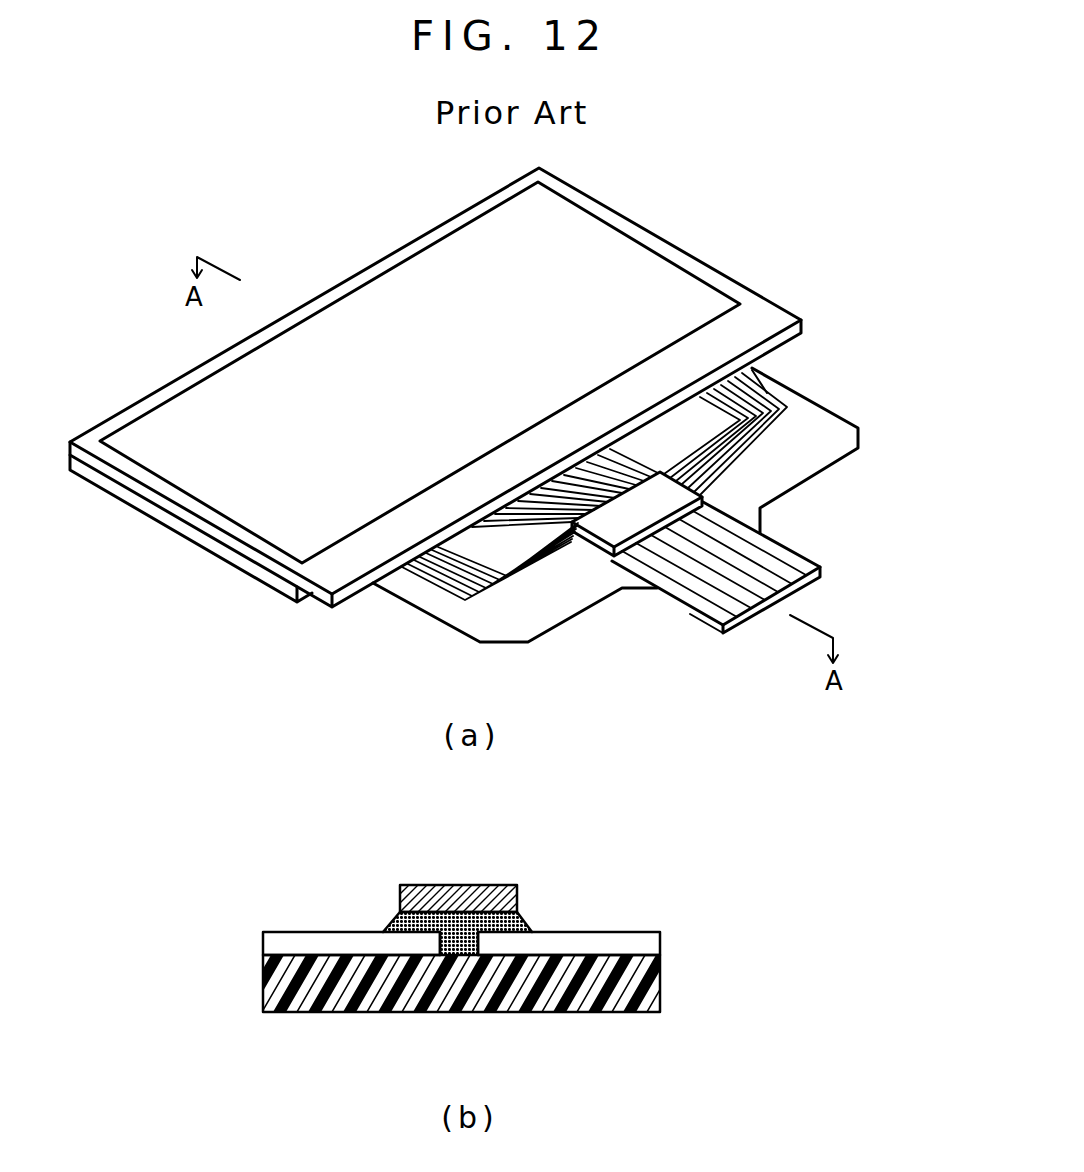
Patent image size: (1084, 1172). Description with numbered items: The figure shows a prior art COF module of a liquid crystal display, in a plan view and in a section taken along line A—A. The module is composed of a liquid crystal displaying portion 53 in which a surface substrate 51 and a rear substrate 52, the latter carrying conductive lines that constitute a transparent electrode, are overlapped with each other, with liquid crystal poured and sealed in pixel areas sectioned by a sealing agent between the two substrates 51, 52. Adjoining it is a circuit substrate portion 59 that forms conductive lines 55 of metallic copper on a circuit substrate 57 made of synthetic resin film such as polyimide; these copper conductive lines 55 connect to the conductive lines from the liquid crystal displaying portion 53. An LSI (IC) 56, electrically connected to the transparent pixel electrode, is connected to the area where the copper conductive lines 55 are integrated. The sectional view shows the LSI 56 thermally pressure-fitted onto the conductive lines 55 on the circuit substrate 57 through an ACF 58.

The surface substrate 51 is at (670, 241).
The rear substrate 52 is at (193, 543).
The liquid crystal displaying portion 53 is at (450, 387).
The conductive lines 55 is at (782, 382).
The LSI (IC) 56 is at (628, 528).
The circuit substrate 57 is at (858, 438).
The ACF (Anisotropic Conductive Film) 58 is at (513, 930).
The circuit substrate portion 59 is at (796, 493).